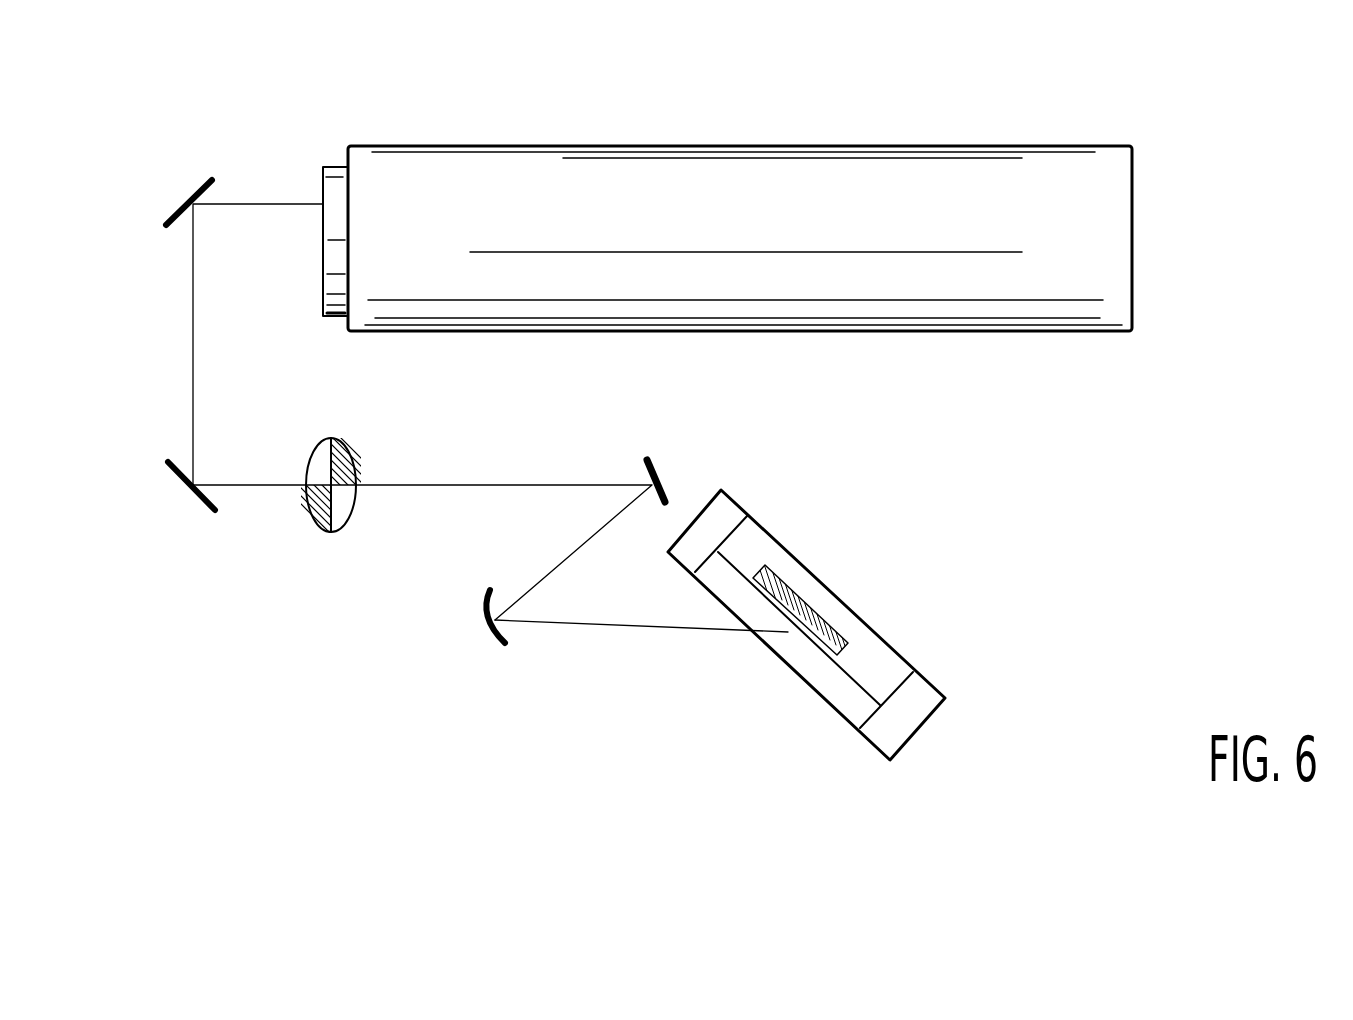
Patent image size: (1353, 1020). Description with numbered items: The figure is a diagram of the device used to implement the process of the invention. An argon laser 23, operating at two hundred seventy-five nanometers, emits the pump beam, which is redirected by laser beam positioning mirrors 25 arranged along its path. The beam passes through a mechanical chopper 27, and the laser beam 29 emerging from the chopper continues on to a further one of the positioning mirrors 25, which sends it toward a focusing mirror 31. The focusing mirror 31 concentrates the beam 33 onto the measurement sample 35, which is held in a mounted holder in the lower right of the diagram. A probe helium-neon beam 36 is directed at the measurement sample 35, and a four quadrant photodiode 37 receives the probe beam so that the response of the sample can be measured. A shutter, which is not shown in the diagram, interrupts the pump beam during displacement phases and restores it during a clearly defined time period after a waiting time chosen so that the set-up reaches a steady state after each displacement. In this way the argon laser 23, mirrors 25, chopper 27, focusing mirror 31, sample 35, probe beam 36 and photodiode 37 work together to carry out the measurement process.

The argon laser 23 is at (1109, 222).
The laser beam positioning mirrors 25 is at (196, 181).
The mechanical chopper 27 is at (348, 462).
The laser beam 29 is at (520, 481).
The focusing mirror 31 is at (495, 637).
The focused beam 33 is at (628, 627).
The measurement sample 35 is at (807, 598).
The probe helium-neon beam 36 is at (833, 680).
The four quadrant photodiode 37 is at (913, 697).